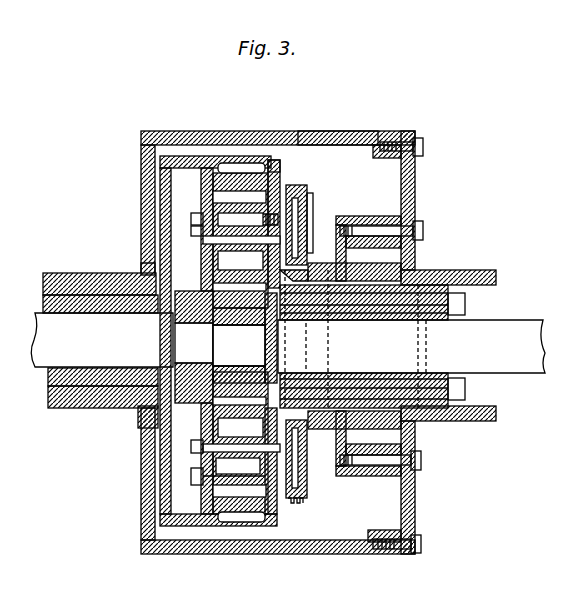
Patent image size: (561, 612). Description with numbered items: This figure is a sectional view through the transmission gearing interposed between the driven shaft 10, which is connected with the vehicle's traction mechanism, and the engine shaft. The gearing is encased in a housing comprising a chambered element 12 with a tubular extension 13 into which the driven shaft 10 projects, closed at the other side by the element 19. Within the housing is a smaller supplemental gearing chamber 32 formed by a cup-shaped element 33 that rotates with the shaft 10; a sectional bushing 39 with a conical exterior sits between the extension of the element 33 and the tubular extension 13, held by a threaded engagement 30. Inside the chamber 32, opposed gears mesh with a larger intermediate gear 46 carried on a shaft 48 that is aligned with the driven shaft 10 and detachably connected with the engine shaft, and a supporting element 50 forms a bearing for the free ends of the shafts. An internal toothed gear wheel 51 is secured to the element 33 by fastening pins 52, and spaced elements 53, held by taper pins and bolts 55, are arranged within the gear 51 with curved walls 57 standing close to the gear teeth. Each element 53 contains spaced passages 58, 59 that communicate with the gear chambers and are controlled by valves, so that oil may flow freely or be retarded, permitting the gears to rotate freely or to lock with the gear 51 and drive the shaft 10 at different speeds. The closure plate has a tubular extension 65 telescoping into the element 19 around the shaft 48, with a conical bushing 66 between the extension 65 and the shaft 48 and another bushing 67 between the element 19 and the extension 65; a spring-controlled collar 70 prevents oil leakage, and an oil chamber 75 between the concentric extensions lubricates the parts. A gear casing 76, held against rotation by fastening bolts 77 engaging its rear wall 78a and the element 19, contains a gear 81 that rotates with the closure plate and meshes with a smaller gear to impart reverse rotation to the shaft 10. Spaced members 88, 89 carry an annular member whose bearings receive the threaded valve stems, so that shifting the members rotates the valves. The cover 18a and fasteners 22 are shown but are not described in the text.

The driven member or shaft 10 is at (102, 340).
The chambered element 12 is at (246, 130).
The tubular extension 13 is at (130, 258).
The housing top wall 18a is at (303, 125).
The element 19 is at (407, 160).
The bolt 22 is at (415, 136).
The threaded engagement 30 is at (100, 385).
The supplemental gearing chamber 32 is at (179, 160).
The cup-shaped element 33 is at (200, 232).
The bushing 39 is at (36, 285).
The gear 46 is at (200, 268).
The shaft 48 is at (411, 346).
The supporting element 50 is at (190, 405).
The internal toothed gear wheel 51 is at (198, 165).
The fastening pins 52 is at (250, 158).
The spaced elements 53 is at (183, 222).
The bolts 55 is at (180, 210).
The curved walls 57 is at (288, 235).
The passage 58 is at (228, 395).
The passage 59 is at (227, 478).
The tubular extension 65 is at (425, 270).
The bushing 66 is at (457, 303).
The bushing 67 is at (445, 291).
The collar 70 is at (298, 292).
The oil chamber 75 is at (291, 266).
The gear casing 76 is at (340, 210).
The fastening bolts 77 is at (415, 222).
The rear wall 78a is at (312, 455).
The gear 81 is at (355, 250).
The spaced member 88 is at (270, 168).
The spaced member 89 is at (300, 215).